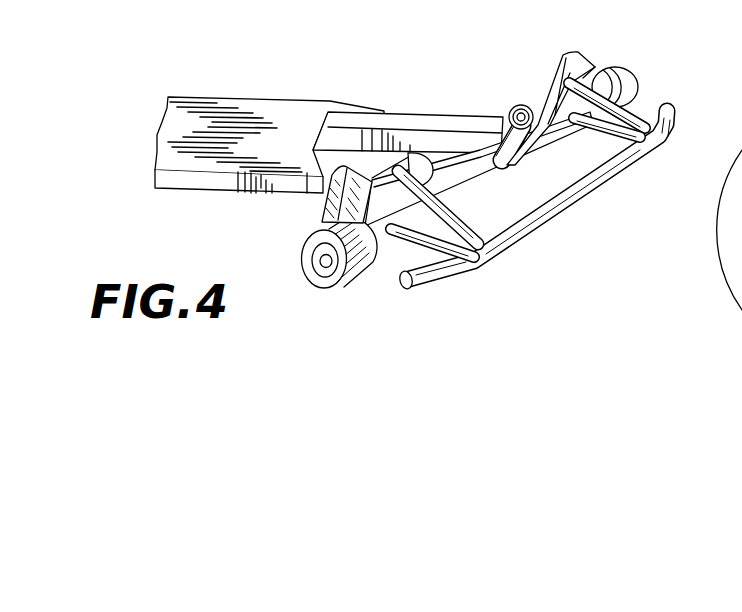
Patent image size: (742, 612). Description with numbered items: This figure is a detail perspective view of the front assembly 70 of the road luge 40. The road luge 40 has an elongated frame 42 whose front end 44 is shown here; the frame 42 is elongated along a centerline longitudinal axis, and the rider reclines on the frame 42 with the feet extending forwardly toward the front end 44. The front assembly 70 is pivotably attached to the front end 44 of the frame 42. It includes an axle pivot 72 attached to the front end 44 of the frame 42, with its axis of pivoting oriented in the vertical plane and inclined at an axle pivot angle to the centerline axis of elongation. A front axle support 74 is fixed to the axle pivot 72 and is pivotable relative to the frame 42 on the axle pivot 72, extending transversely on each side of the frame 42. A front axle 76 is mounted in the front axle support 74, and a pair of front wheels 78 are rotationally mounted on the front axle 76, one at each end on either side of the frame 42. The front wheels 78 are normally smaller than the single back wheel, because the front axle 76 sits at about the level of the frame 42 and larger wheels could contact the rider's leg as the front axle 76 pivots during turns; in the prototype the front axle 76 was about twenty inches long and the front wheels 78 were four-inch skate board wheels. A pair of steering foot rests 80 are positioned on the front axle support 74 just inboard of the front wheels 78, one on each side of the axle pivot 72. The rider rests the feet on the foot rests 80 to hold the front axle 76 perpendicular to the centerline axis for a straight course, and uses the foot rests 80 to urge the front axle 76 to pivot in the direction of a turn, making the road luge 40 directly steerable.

The road luge 40 is at (214, 87).
The frame 42 is at (207, 170).
The front end 44 is at (290, 112).
The front assembly 70 is at (583, 208).
The axle pivot 72 is at (508, 124).
The front axle support 74 is at (483, 177).
The front axle 76 is at (320, 262).
The front wheels 78 is at (330, 289).
The steering foot rests 80 is at (328, 197).